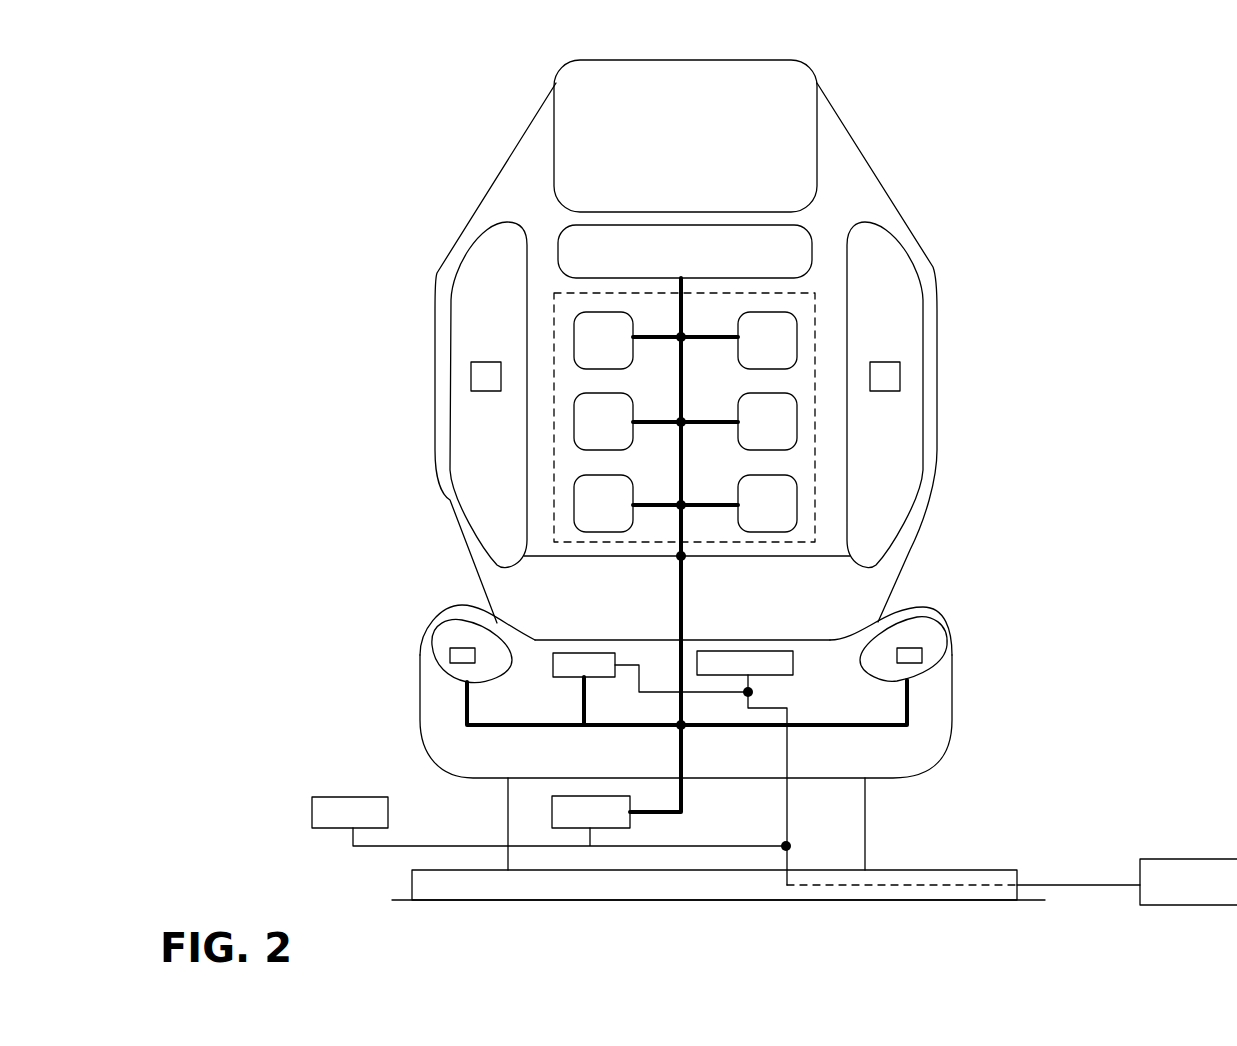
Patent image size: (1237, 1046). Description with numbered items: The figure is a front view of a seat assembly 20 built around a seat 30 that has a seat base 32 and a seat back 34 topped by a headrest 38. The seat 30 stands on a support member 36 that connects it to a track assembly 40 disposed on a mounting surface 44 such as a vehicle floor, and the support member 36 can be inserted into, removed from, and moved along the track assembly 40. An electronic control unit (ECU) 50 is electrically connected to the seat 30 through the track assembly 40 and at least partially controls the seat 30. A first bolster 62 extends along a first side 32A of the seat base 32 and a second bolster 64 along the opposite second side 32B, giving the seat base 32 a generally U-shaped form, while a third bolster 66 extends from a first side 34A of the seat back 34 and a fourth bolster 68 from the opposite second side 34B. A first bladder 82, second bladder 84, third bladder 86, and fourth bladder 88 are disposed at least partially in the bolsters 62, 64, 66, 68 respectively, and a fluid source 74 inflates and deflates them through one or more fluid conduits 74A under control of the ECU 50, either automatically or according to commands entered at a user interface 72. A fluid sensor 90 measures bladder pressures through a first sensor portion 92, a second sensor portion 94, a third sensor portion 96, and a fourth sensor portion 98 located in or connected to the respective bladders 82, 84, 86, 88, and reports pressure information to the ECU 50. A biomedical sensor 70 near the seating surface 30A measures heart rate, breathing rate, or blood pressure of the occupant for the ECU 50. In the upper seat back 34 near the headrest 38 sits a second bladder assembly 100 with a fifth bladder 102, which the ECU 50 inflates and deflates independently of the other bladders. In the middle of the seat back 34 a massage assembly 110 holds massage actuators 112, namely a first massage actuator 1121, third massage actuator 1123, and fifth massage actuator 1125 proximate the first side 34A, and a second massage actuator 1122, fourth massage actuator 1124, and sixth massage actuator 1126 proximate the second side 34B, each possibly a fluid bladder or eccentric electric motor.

The seat assembly 20 is at (1133, 115).
The seat 30 is at (1067, 370).
The seating surface 30A is at (543, 240).
The seat base 32 is at (947, 733).
The first side of seat base 32A is at (390, 705).
The second side of seat base 32B is at (980, 695).
The seat back 34 is at (833, 638).
The first side of seat back 34A is at (387, 448).
The second side of seat back 34B is at (1012, 437).
The support member 36 is at (867, 835).
The headrest 38 is at (837, 115).
The track assembly 40 is at (977, 870).
The mounting surface 44 is at (397, 902).
The electronic control unit (ECU) 50 is at (1168, 859).
The first bolster 62 is at (437, 610).
The second bolster 64 is at (877, 625).
The third bolster 66 is at (435, 322).
The fourth bolster 68 is at (938, 343).
The biomedical sensor 70 is at (740, 650).
The user interface 72 is at (335, 796).
The fluid source 74 is at (552, 815).
The fluid conduit 74A is at (693, 745).
The first bladder 82 is at (430, 625).
The second bladder 84 is at (950, 633).
The third bladder 86 is at (462, 475).
The fourth bladder 88 is at (898, 477).
The fluid sensor 90 is at (602, 650).
The first sensor portion 92 is at (450, 656).
The second sensor portion 94 is at (922, 655).
The third sensor portion 96 is at (480, 373).
The fourth sensor portion 98 is at (890, 378).
The second bladder assembly 100 is at (817, 232).
The fifth bladder 102 is at (783, 240).
The massage assembly 110 is at (818, 318).
The massage actuators 112 is at (684, 384).
The first massage actuator 1121 is at (600, 327).
The second massage actuator 1122 is at (753, 323).
The third massage actuator 1123 is at (588, 425).
The fourth massage actuator 1124 is at (782, 428).
The fifth massage actuator 1125 is at (593, 497).
The sixth massage actuator 1126 is at (780, 502).